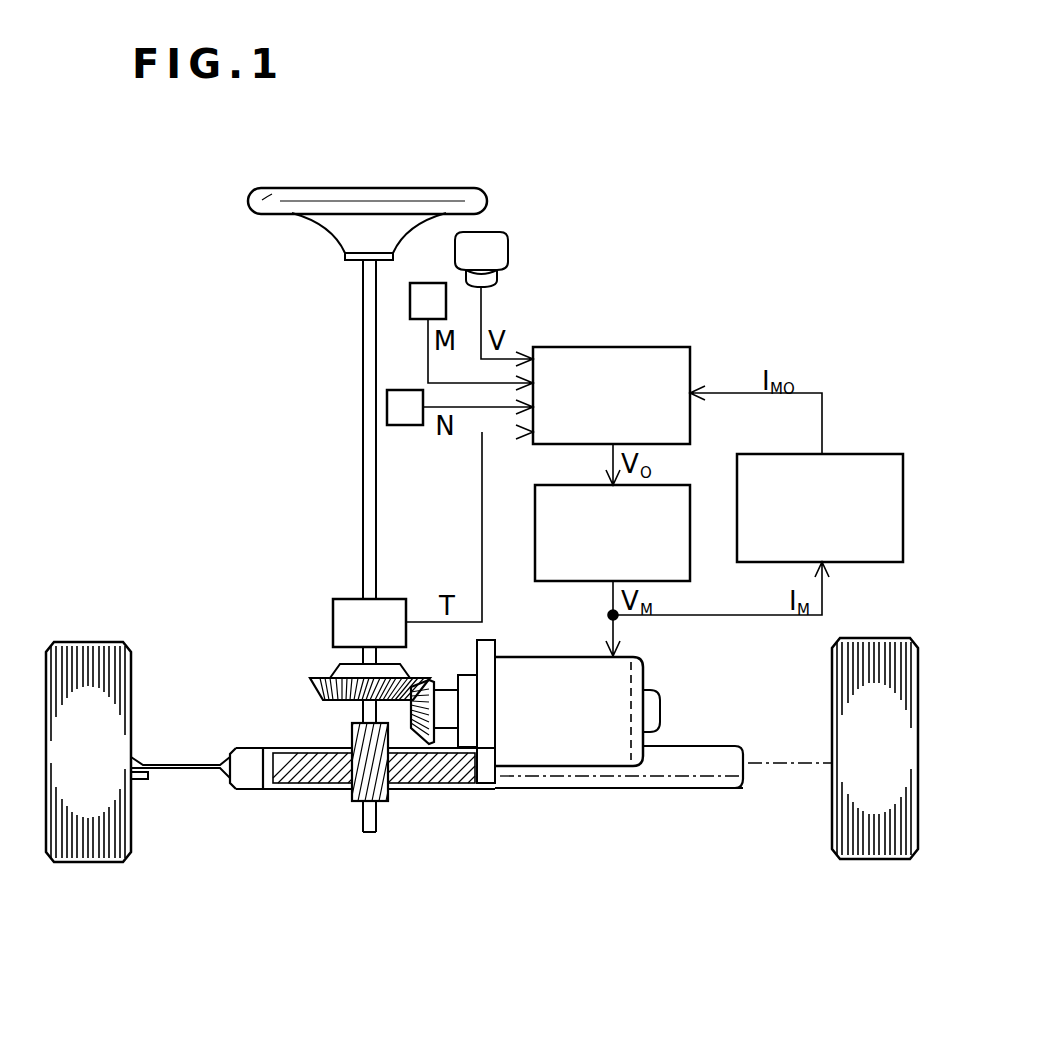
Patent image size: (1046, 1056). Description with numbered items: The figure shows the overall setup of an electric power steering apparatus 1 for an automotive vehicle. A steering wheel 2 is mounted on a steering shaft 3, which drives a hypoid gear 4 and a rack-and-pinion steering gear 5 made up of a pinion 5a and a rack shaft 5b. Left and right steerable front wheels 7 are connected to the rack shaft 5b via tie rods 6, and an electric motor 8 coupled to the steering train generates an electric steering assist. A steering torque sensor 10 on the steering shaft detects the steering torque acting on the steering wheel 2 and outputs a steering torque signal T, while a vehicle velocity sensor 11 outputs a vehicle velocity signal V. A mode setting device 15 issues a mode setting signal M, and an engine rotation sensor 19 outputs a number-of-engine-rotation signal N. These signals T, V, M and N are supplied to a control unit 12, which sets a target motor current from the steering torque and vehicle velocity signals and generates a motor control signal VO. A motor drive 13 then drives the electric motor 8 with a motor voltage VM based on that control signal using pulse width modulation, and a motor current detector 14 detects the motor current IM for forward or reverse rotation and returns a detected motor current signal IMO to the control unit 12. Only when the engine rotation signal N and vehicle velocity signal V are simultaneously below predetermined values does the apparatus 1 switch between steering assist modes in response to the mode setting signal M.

The electric power steering apparatus 1 is at (373, 120).
The steering wheel 2 is at (440, 188).
The steering shaft 3 is at (362, 320).
The hypoid gear 4 is at (412, 748).
The rack-and-pinion steering gear 5 is at (324, 818).
The pinion 5a is at (392, 800).
The rack shaft 5b is at (690, 763).
The tie rods 6 is at (173, 772).
The steerable front wheels 7 is at (83, 642).
The electric motor 8 is at (643, 667).
The steering torque sensor 10 is at (333, 620).
The vehicle velocity sensor 11 is at (493, 247).
The control unit 12 is at (625, 347).
The motor drive 13 is at (660, 485).
The motor current detector 14 is at (848, 454).
The mode setting device 15 is at (446, 300).
The engine rotation sensor 19 is at (405, 390).